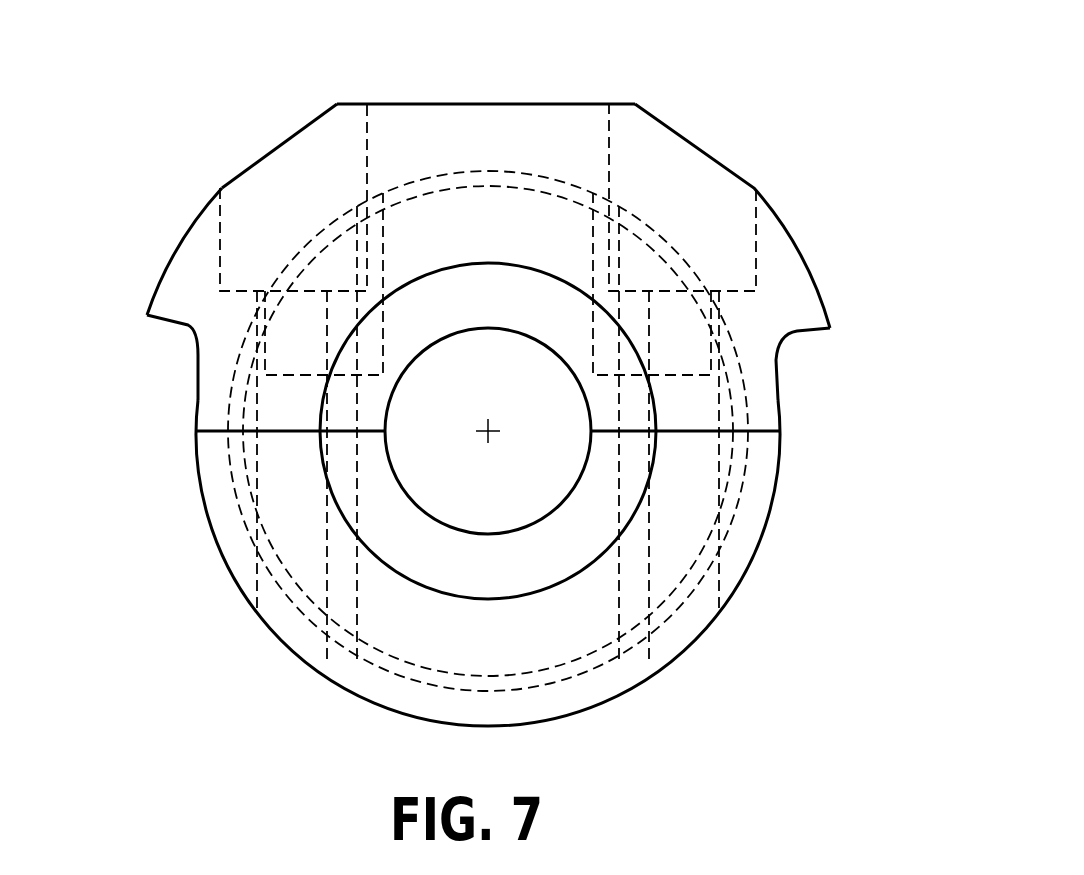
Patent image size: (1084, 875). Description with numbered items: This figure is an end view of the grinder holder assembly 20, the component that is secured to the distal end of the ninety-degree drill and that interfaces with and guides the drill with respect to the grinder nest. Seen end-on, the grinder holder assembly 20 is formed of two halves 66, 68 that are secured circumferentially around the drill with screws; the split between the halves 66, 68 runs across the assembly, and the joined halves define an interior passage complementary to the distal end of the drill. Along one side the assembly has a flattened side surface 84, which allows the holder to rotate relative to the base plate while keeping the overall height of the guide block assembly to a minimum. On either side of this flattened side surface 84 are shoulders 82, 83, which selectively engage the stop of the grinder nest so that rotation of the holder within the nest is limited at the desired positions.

The grinder holder assembly 20 is at (745, 108).
The flattened side surface 84 is at (483, 104).
The half of grinder holder assembly 66 is at (787, 282).
The shoulder 82 is at (177, 338).
The shoulder 83 is at (802, 343).
The half of grinder holder assembly 68 is at (745, 550).